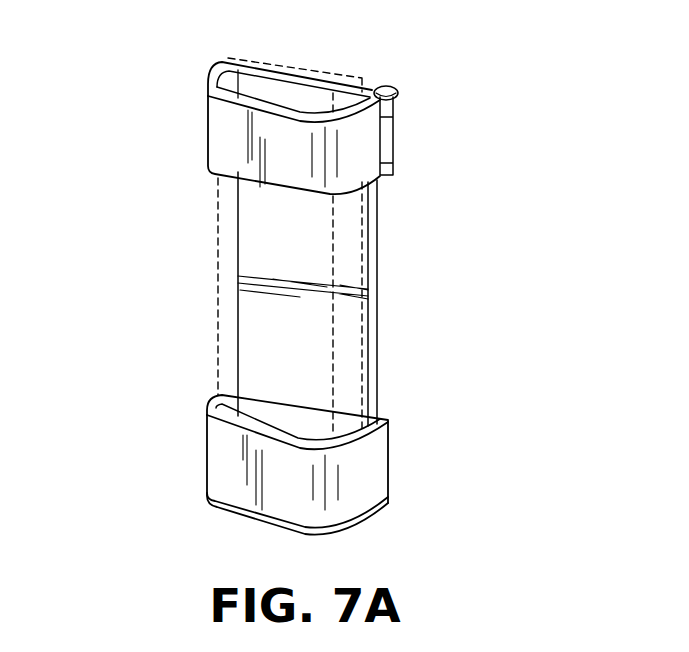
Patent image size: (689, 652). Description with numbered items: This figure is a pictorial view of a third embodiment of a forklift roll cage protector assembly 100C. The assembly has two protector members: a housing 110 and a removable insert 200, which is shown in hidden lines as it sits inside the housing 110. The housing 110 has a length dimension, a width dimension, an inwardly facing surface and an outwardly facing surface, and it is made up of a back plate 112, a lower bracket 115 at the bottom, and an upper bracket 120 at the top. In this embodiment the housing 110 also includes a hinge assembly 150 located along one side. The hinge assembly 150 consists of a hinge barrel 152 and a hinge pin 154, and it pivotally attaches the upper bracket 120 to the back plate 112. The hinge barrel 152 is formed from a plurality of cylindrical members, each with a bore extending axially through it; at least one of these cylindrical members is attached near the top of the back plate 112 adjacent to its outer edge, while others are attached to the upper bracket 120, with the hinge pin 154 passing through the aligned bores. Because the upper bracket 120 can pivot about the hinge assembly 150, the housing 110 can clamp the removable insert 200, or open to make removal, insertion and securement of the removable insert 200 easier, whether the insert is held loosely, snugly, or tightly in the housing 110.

The roll cage protector assembly 100C is at (160, 86).
The housing 110 is at (372, 302).
The back plate 112 is at (237, 303).
The lower bracket 115 is at (217, 461).
The upper bracket 120 is at (218, 144).
The hinge assembly 150 is at (396, 168).
The hinge barrel 152 is at (393, 132).
The hinge pin 154 is at (384, 89).
The removable insert 200 is at (217, 335).